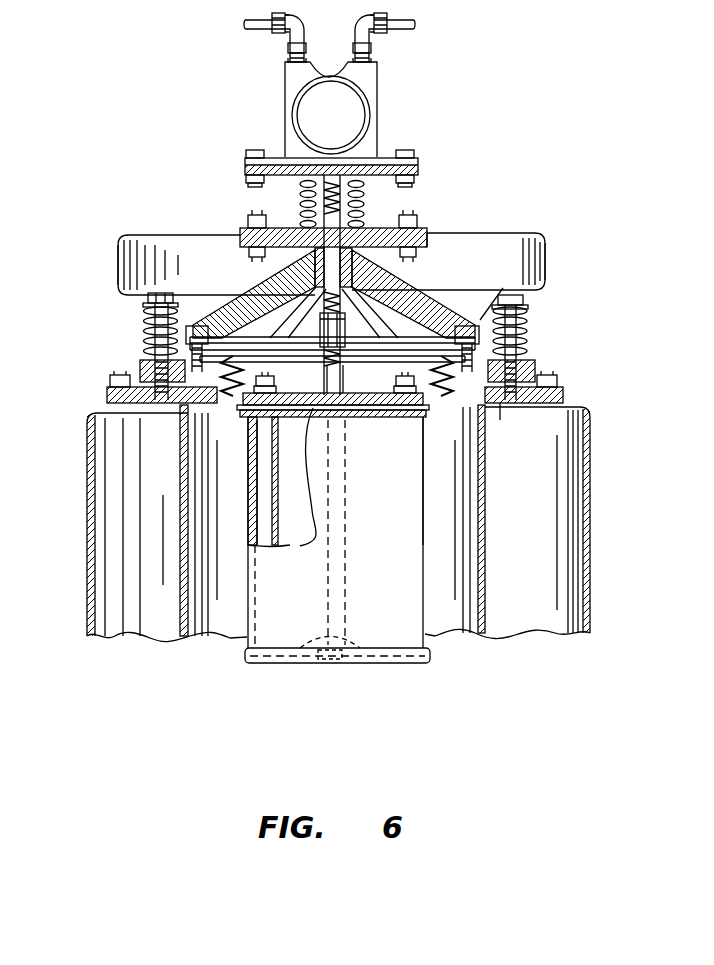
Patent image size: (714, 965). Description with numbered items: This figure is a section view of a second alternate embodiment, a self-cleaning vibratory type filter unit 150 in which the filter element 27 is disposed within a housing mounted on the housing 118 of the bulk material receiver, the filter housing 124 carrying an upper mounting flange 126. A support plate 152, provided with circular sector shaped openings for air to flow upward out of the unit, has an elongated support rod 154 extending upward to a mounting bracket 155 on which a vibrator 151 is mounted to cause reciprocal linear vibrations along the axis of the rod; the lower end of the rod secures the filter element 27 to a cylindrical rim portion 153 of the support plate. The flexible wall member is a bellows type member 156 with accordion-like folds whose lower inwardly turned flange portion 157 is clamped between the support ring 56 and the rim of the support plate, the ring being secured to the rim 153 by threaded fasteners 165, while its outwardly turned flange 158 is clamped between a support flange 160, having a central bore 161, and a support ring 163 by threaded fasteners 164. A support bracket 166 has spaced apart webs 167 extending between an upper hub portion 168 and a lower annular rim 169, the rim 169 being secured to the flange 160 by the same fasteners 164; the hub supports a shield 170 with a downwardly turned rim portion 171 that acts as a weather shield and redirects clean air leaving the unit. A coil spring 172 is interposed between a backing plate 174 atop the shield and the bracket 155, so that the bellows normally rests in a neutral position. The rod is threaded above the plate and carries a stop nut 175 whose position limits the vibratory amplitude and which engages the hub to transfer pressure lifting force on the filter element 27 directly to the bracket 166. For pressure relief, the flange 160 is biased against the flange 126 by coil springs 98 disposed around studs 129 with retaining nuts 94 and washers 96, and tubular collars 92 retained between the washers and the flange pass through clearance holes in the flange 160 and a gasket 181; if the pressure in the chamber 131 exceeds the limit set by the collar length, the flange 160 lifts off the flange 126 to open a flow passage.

The vibrator 151 is at (377, 97).
The coil spring 172 is at (300, 196).
The mounting bracket 155 is at (372, 178).
The backing plate 174 is at (378, 232).
The upper hub portion 168 is at (257, 262).
The webs 167 is at (258, 286).
The support bracket 166 is at (397, 281).
The shield 170 is at (510, 233).
The support rod 154 is at (395, 283).
The lower annular rim 169 is at (470, 332).
The threaded fasteners 164 is at (503, 288).
The downwardly turned rim portion 171 is at (547, 286).
The coil springs 98 is at (528, 305).
The support ring 163 is at (516, 331).
The outwardly turned flange 158 is at (520, 349).
The support flange 160 is at (530, 360).
The mounting flange 126 is at (563, 390).
The retaining nuts 94 is at (143, 306).
The washers 96 is at (143, 317).
The studs 129 is at (143, 330).
The tubular collars 92 is at (143, 356).
The threaded fasteners 165 is at (283, 341).
The central bore 161 is at (246, 402).
The support ring 56 is at (250, 420).
The cylindrical rim portion 153 is at (284, 414).
The nut 175 is at (336, 412).
The support plate 152 is at (385, 406).
The lower inwardly turned flange portion 157 is at (407, 406).
The bellows type member 156 is at (463, 388).
The gasket 181 is at (497, 396).
The self-cleaning vibratory type filter unit 150 is at (432, 502).
The chamber 131 is at (240, 565).
The filter element 27 is at (425, 583).
The housing 124 is at (490, 612).
The housing 118 is at (591, 591).